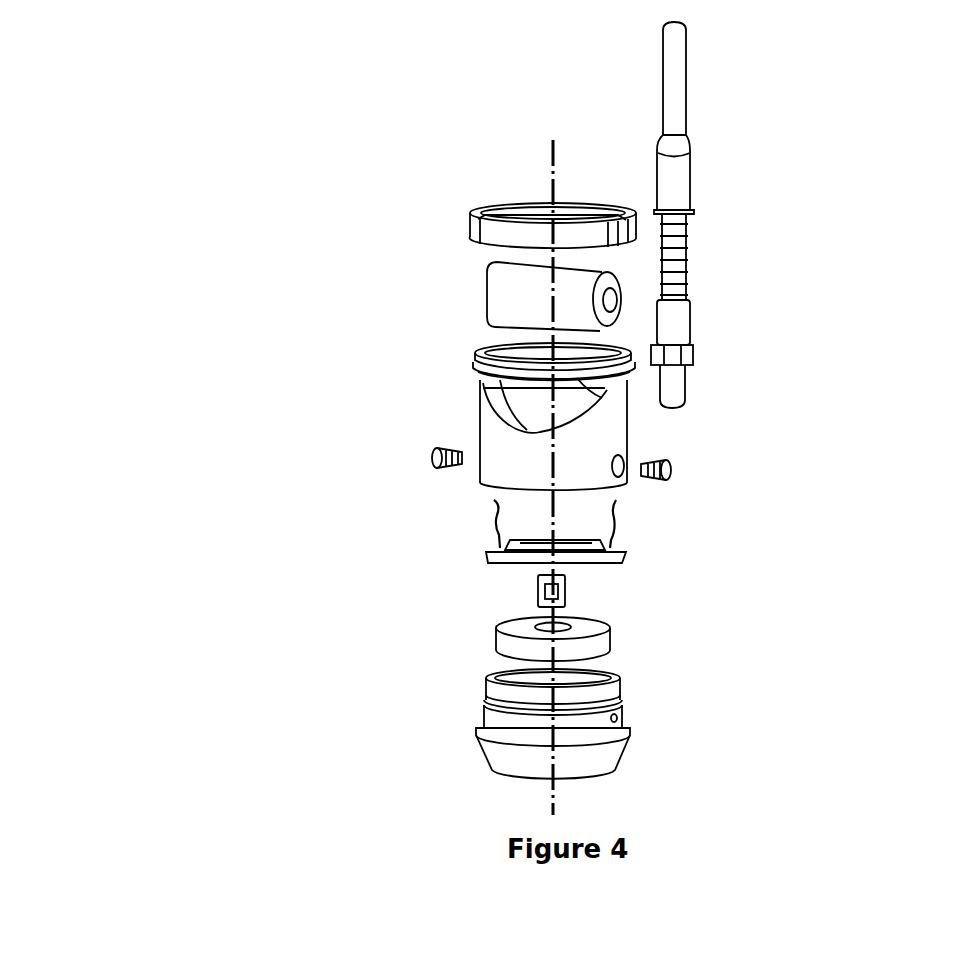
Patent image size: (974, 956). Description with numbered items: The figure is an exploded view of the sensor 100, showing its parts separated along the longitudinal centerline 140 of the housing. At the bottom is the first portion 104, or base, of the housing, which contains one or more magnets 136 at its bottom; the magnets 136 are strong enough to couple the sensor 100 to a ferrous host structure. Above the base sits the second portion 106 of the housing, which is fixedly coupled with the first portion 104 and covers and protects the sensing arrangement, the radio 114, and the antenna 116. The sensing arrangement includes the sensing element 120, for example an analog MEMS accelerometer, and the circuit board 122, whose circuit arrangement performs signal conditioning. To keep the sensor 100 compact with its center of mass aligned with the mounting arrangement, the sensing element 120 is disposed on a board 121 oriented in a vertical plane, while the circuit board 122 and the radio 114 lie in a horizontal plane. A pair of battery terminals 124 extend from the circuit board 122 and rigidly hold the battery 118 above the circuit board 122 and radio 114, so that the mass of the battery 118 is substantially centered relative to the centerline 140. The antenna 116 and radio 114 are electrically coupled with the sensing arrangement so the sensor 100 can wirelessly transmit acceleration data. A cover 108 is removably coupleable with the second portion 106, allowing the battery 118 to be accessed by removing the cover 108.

The sensor 100 is at (372, 670).
The first portion 104 is at (598, 760).
The second portion 106 is at (495, 438).
The cover 108 is at (495, 228).
The radio 114 is at (495, 548).
The antenna 116 is at (680, 215).
The battery 118 is at (528, 297).
The sensing element 120 is at (565, 585).
The board 121 is at (545, 595).
The circuit board 122 is at (520, 568).
The battery terminals 124 is at (615, 520).
The magnets 136 is at (590, 637).
The centerline 140 is at (545, 160).